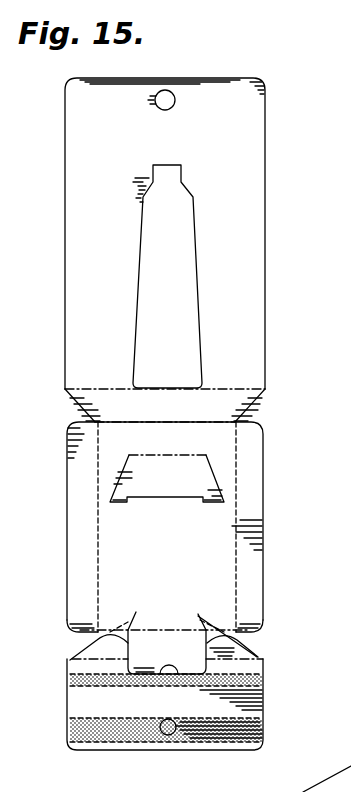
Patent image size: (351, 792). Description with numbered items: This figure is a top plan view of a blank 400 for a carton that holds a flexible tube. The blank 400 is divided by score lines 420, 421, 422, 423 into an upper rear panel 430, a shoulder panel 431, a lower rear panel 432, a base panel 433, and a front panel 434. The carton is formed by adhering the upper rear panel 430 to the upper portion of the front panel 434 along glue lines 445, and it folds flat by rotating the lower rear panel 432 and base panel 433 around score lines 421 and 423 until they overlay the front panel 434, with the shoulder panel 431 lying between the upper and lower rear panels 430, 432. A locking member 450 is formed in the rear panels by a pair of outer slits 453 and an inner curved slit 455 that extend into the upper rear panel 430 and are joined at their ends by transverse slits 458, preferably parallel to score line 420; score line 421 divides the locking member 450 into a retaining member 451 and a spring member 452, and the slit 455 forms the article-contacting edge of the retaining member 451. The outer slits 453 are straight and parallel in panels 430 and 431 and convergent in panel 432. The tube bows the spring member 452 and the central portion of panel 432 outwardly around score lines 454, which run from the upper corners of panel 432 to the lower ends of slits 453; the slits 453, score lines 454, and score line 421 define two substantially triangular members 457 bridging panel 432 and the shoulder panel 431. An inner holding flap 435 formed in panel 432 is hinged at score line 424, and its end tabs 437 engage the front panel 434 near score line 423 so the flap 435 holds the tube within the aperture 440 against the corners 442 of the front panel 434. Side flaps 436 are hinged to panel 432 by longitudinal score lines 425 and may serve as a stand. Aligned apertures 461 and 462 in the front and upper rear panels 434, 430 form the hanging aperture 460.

The blank 400 is at (183, 423).
The score line 420 is at (72, 666).
The score line 421 is at (138, 630).
The score line 422 is at (203, 422).
The score line 423 is at (105, 387).
The score line 424 is at (160, 455).
The longitudinal score lines 425 is at (98, 479).
The upper rear panel 430 is at (176, 712).
The shoulder panel 431 is at (116, 657).
The lower rear panel 432 is at (178, 566).
The base panel 433 is at (181, 415).
The front panel 434 is at (177, 134).
The inner holding flap 435 is at (178, 486).
The side flaps 436 is at (78, 518).
The end tabs 437 is at (188, 516).
The aperture 440 is at (196, 212).
The corners 442 is at (134, 383).
The glue lines 445 is at (72, 682).
The locking member 450 is at (181, 610).
The retaining member 451 is at (177, 656).
The spring member 452 is at (177, 631).
The outer slits 453 is at (98, 642).
The score lines 454 is at (120, 626).
The inner curved slit 455 is at (178, 668).
The triangular members 457 is at (94, 629).
The transverse slits 458 is at (138, 680).
The aperture 460 is at (316, 777).
The aperture 461 is at (170, 90).
The aperture 462 is at (170, 735).